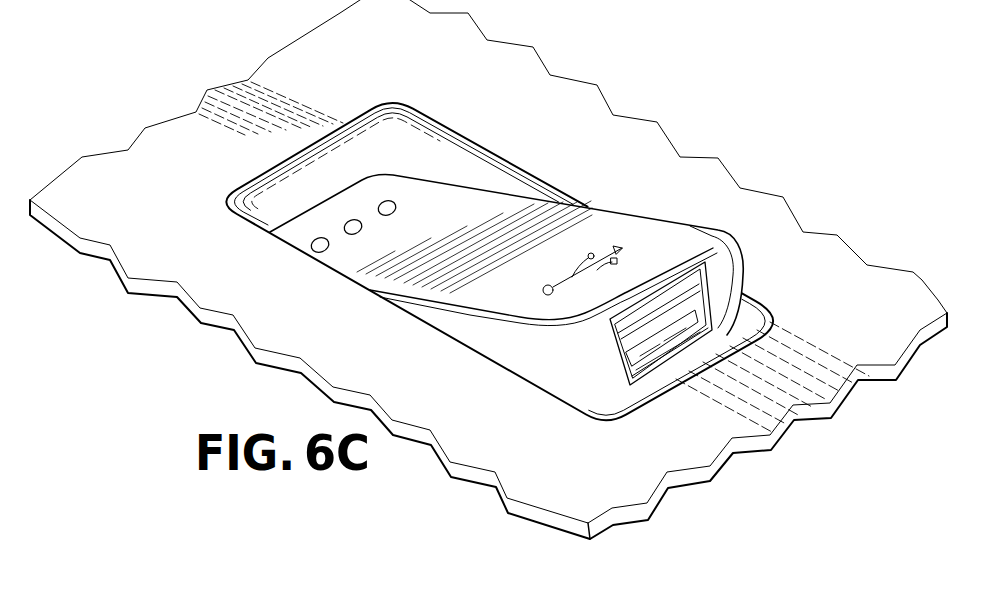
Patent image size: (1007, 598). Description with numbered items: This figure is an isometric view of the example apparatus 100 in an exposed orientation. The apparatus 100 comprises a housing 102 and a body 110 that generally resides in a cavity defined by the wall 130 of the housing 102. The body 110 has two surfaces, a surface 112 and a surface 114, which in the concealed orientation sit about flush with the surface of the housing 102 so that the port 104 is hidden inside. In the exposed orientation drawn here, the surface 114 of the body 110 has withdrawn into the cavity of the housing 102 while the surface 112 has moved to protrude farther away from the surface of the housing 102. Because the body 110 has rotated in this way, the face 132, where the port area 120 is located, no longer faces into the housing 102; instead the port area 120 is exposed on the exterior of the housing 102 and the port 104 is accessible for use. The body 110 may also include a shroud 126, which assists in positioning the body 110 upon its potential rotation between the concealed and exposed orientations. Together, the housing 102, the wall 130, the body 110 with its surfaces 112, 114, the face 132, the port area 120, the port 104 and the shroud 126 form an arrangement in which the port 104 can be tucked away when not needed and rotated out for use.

The apparatus 100 is at (650, 90).
The housing 102 is at (603, 478).
The port 104 is at (663, 290).
The body 110 is at (506, 289).
The surface 112 is at (635, 233).
The surface 114 is at (423, 207).
The port area 120 is at (549, 241).
The shroud 126 is at (650, 380).
The wall 130 is at (390, 133).
The face 132 is at (728, 272).